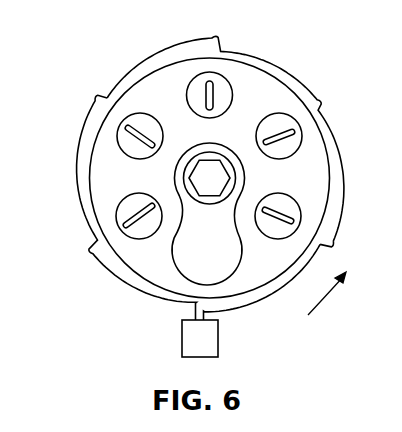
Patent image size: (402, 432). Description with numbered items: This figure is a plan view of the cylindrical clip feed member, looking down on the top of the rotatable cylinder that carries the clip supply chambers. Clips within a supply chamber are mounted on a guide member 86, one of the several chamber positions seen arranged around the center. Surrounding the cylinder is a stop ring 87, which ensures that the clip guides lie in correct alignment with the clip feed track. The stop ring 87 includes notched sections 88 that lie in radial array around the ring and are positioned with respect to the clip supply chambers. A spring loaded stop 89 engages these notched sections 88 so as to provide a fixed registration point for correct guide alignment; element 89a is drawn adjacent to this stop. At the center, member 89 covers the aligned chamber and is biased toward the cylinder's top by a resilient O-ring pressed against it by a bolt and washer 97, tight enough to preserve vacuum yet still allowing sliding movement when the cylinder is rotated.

The guide member 86 is at (225, 84).
The stop ring 87 is at (262, 292).
The notched sections 88 is at (320, 252).
The spring loaded stop 89 is at (185, 265).
The lock block 89a is at (218, 337).
The washer 97 is at (188, 179).